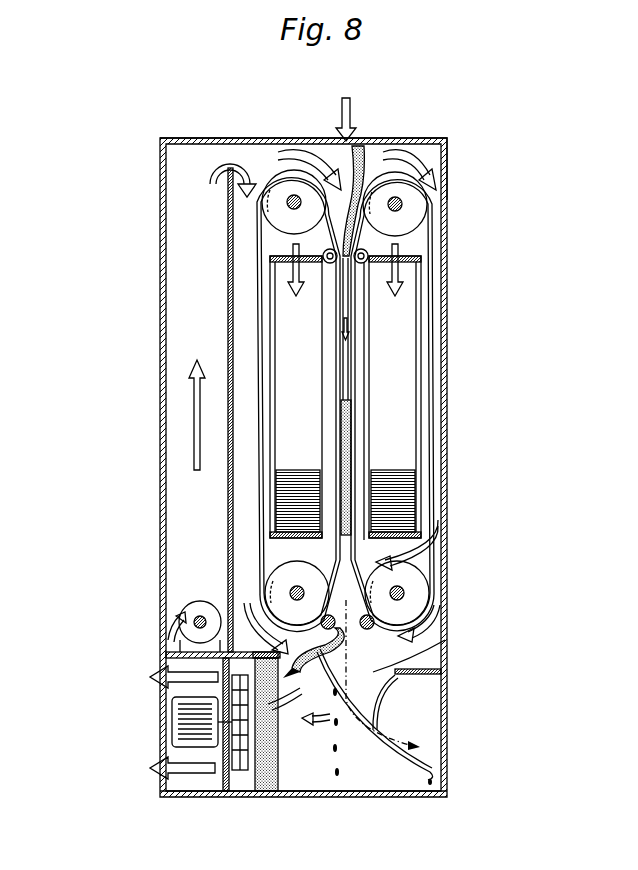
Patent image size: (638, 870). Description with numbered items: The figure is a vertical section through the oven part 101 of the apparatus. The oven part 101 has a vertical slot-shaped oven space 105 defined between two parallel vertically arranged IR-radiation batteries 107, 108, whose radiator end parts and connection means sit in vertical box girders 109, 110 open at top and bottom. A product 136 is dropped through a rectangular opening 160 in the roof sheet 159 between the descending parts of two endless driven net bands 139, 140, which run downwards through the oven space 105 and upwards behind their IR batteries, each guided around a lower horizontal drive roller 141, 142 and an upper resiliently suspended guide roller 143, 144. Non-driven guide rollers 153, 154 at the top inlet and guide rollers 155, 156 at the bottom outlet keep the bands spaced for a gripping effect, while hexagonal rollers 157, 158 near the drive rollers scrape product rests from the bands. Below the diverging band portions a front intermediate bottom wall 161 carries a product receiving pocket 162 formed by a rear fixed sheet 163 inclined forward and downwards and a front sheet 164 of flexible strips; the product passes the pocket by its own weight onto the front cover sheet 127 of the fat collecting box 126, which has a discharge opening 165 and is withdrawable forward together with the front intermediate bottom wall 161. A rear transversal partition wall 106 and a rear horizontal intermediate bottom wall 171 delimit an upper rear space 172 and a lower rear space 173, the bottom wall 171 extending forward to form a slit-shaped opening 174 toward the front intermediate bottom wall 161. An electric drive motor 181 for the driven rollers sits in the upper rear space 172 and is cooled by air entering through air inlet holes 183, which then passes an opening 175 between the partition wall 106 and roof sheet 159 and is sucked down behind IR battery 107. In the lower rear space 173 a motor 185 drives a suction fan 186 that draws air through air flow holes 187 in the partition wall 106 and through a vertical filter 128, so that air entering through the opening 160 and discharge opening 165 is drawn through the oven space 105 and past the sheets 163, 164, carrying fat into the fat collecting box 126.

The oven part 101 is at (158, 444).
The oven space 105 is at (364, 333).
The rear transversal partition wall 106 is at (230, 320).
The IR-radiation battery 107 is at (283, 339).
The IR-radiation battery 108 is at (398, 379).
The vertical box girder 109 is at (283, 452).
The vertical box girder 110 is at (407, 427).
The fat collecting box 126 is at (387, 785).
The front cover sheet 127 is at (387, 753).
The filter 128 is at (268, 793).
The product 136 is at (365, 165).
The net band 139 is at (260, 227).
The net band 140 is at (430, 268).
The lower drive roller 141 is at (277, 577).
The lower drive roller 142 is at (418, 588).
The upper guide roller 143 is at (275, 197).
The upper guide roller 144 is at (417, 212).
The guide roller 153 is at (330, 264).
The guide roller 154 is at (363, 264).
The guide roller 155 is at (332, 545).
The guide roller 156 is at (363, 545).
The hexagonal roller 157 is at (322, 620).
The hexagonal roller 158 is at (366, 631).
The roof sheet 159 is at (441, 140).
The rectangular opening 160 is at (331, 141).
The front intermediate bottom wall 161 is at (430, 669).
The product receiving pocket 162 is at (445, 640).
The rear fixed sheet 163 is at (330, 708).
The front sheet 164 is at (383, 694).
The discharge opening 165 is at (433, 733).
The rear horizontal intermediate bottom wall 171 is at (190, 658).
The upper rear space 172 is at (213, 282).
The lower rear space 173 is at (195, 758).
The transversal slit-shaped opening 174 is at (297, 668).
The opening 175 is at (233, 147).
The electric drive motor 181 is at (188, 606).
The air inlet holes 183 is at (165, 627).
The motor 185 is at (178, 714).
The suction fan 186 is at (242, 772).
The air flow holes 187 is at (222, 780).